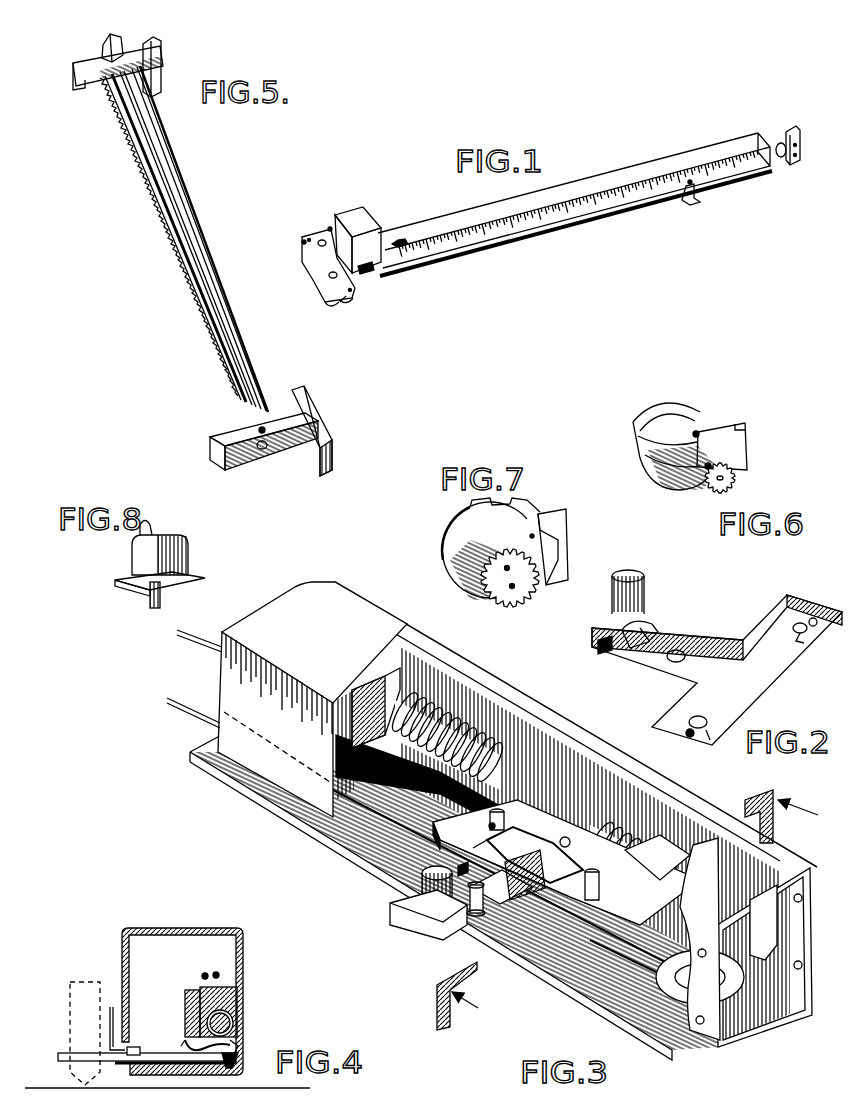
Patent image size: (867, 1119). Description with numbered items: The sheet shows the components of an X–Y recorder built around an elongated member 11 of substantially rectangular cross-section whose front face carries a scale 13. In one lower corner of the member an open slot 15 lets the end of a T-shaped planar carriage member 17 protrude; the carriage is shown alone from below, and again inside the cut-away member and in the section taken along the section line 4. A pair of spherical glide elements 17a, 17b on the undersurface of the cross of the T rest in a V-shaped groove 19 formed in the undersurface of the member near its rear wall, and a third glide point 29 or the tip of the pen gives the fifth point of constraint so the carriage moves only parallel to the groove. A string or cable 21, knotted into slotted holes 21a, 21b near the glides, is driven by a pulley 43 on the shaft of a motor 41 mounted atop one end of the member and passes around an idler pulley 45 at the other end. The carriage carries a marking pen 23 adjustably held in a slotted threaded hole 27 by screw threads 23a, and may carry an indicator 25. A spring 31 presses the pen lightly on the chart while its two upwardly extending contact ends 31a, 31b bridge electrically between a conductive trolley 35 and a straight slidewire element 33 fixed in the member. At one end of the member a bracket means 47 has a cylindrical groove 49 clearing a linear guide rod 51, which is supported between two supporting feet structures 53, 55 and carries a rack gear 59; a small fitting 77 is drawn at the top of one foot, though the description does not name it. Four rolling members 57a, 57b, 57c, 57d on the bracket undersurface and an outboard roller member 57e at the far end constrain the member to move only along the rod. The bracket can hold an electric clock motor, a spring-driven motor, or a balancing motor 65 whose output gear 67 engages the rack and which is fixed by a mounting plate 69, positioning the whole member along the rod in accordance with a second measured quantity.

In FIG. 1, the elongated member 11 is at (614, 172).
In FIG. 3, the elongated member 11 is at (300, 592).
In FIG. 4, the elongated member 11 is at (197, 928).
In FIG. 1, the scale 13 is at (683, 168).
In FIG. 1, the open slot 15 is at (488, 248).
In FIG. 4, the open slot 15 is at (130, 1040).
In FIG. 1, the planar carriage member 17 is at (698, 200).
In FIG. 2, the planar carriage member 17 is at (755, 682).
In FIG. 3, the planar carriage member 17 is at (566, 862).
In FIG. 4, the planar carriage member 17 is at (60, 1057).
In FIG. 2, the spherical glide element 17a is at (710, 742).
In FIG. 3, the spherical glide element 17a is at (512, 822).
In FIG. 2, the spherical glide element 17b is at (802, 645).
In FIG. 3, the spherical glide element 17b is at (598, 892).
In FIG. 4, the spherical glide element 17b is at (229, 1072).
In FIG. 3, the V-shaped groove 19 is at (768, 1005).
In FIG. 3, the string or cable 21 is at (180, 700).
In FIG. 2, the slotted hole 21a is at (690, 742).
In FIG. 3, the slotted hole 21a is at (488, 826).
In FIG. 2, the slotted hole 21b is at (815, 618).
In FIG. 3, the slotted hole 21b is at (657, 857).
In FIG. 2, the marking pen 23 is at (640, 560).
In FIG. 3, the marking pen 23 is at (418, 892).
In FIG. 4, the marking pen 23 is at (70, 1010).
In FIG. 2, the screw threads 23a is at (606, 652).
In FIG. 3, the screw threads 23a is at (417, 900).
In FIG. 3, the indicator 25 is at (477, 915).
In FIG. 4, the indicator 25 is at (110, 1007).
In FIG. 2, the threaded hole 27 is at (648, 628).
In FIG. 3, the threaded hole 27 is at (418, 932).
In FIG. 2, the third glide point 29 is at (668, 661).
In FIG. 3, the third glide point 29 is at (515, 940).
In FIG. 4, the third glide point 29 is at (125, 1072).
In FIG. 3, the spring 31 is at (565, 882).
In FIG. 4, the spring 31 is at (195, 1052).
In FIG. 3, the spring contact end 31a is at (478, 836).
In FIG. 4, the spring contact end 31a is at (182, 1032).
In FIG. 3, the spring contact end 31b is at (565, 840).
In FIG. 4, the spring contact end 31b is at (238, 1040).
In FIG. 3, the straight slidewire element 33 is at (492, 762).
In FIG. 4, the straight slidewire element 33 is at (236, 1030).
In FIG. 3, the conductive trolley 35 is at (356, 700).
In FIG. 4, the conductive trolley 35 is at (190, 1000).
In FIG. 1, the motor 41 is at (365, 215).
In FIG. 1, the pulley 43 is at (366, 272).
In FIG. 3, the idler pulley 45 is at (728, 1003).
In FIG. 1, the bracket means 47 is at (311, 232).
In FIG. 1, the cylindrical groove 49 is at (347, 300).
In FIG. 5, the linear guide rod 51 is at (220, 342).
In FIG. 5, the supporting foot structure 53 is at (316, 430).
In FIG. 5, the supporting foot structure 55 is at (158, 44).
In FIG. 1, the rolling member 57a is at (330, 298).
In FIG. 1, the rolling member 57b is at (360, 295).
In FIG. 1, the rolling member 57c is at (302, 243).
In FIG. 1, the rolling member 57d is at (328, 226).
In FIG. 1, the outboard roller member 57e is at (788, 134).
In FIG. 5, the rack gear 59 is at (178, 268).
In FIG. 8, the motor 65 is at (188, 552).
In FIG. 8, the output gear 67 is at (163, 600).
In FIG. 8, the mounting plate 69 is at (198, 578).
In FIG. 5, the nut 77 is at (117, 44).
In FIG. 3, the section line 4 is at (634, 910).